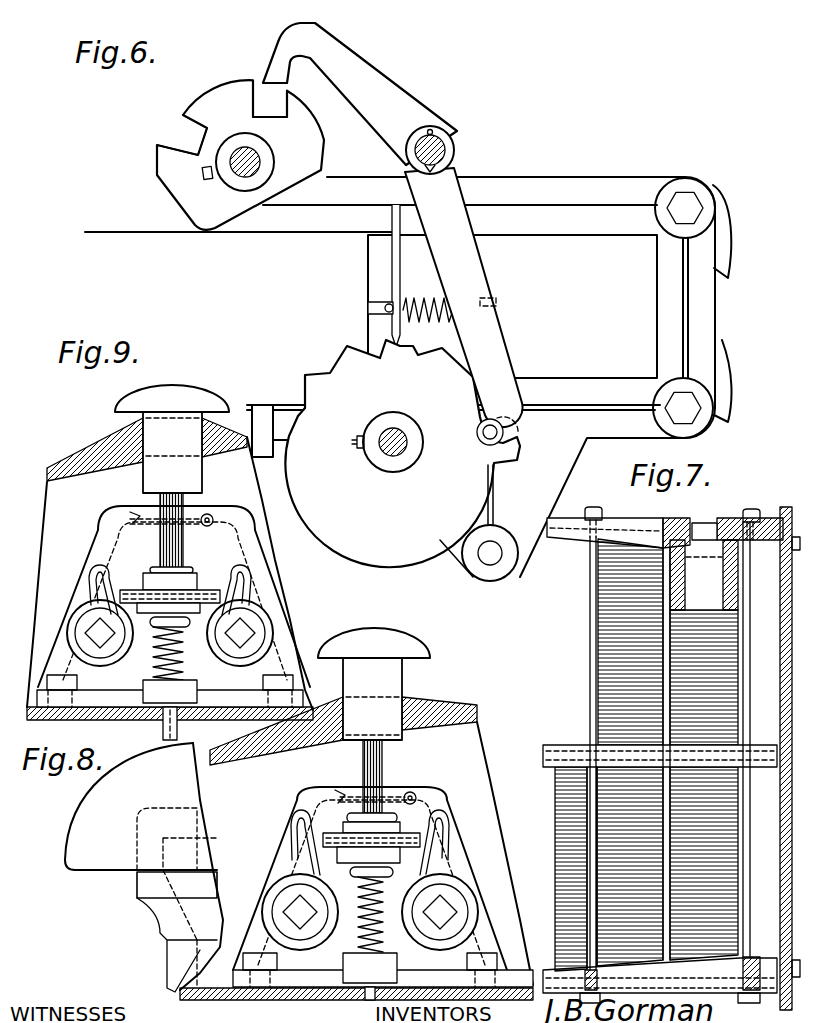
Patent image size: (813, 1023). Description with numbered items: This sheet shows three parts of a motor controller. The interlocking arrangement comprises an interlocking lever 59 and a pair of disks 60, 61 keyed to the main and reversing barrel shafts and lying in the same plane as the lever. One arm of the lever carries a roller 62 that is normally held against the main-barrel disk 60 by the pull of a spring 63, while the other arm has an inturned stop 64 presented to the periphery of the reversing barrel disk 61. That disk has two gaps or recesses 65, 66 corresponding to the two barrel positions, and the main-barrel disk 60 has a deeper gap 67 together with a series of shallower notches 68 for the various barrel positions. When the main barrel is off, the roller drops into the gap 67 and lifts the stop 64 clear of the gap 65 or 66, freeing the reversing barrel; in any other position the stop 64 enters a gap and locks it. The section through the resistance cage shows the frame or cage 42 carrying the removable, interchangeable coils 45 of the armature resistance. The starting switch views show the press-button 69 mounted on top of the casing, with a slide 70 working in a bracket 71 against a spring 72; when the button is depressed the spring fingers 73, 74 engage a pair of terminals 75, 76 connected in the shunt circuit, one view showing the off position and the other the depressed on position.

In FIG. 7, the frame or cage 42 is at (615, 522).
In FIG. 7, the resistance coils 45 is at (665, 573).
In FIG. 6, the interlocking lever 59 is at (464, 297).
In FIG. 6, the main-barrel disk 60 is at (402, 453).
In FIG. 6, the reversing barrel disk 61 is at (232, 155).
In FIG. 6, the roller 62 is at (518, 430).
In FIG. 6, the spring 63 is at (415, 322).
In FIG. 6, the inturned stop 64 is at (280, 67).
In FIG. 6, the gap or recess 65 is at (268, 105).
In FIG. 6, the gap or recess 66 is at (190, 137).
In FIG. 6, the gap or recess 67 is at (478, 422).
In FIG. 6, the notches 68 is at (322, 378).
In FIG. 9, the press-button 69 is at (127, 402).
In FIG. 8, the press-button 69 is at (380, 637).
In FIG. 9, the slide 70 is at (187, 503).
In FIG. 8, the slide 70 is at (370, 770).
In FIG. 9, the bracket 71 is at (227, 522).
In FIG. 8, the bracket 71 is at (430, 802).
In FIG. 9, the spring 72 is at (163, 663).
In FIG. 8, the spring 72 is at (360, 937).
In FIG. 9, the spring finger 73 is at (97, 580).
In FIG. 8, the spring finger 73 is at (310, 838).
In FIG. 9, the spring finger 74 is at (233, 613).
In FIG. 8, the spring finger 74 is at (435, 847).
In FIG. 9, the terminal 75 is at (97, 637).
In FIG. 8, the terminal 75 is at (297, 913).
In FIG. 9, the terminal 76 is at (243, 637).
In FIG. 8, the terminal 76 is at (447, 913).